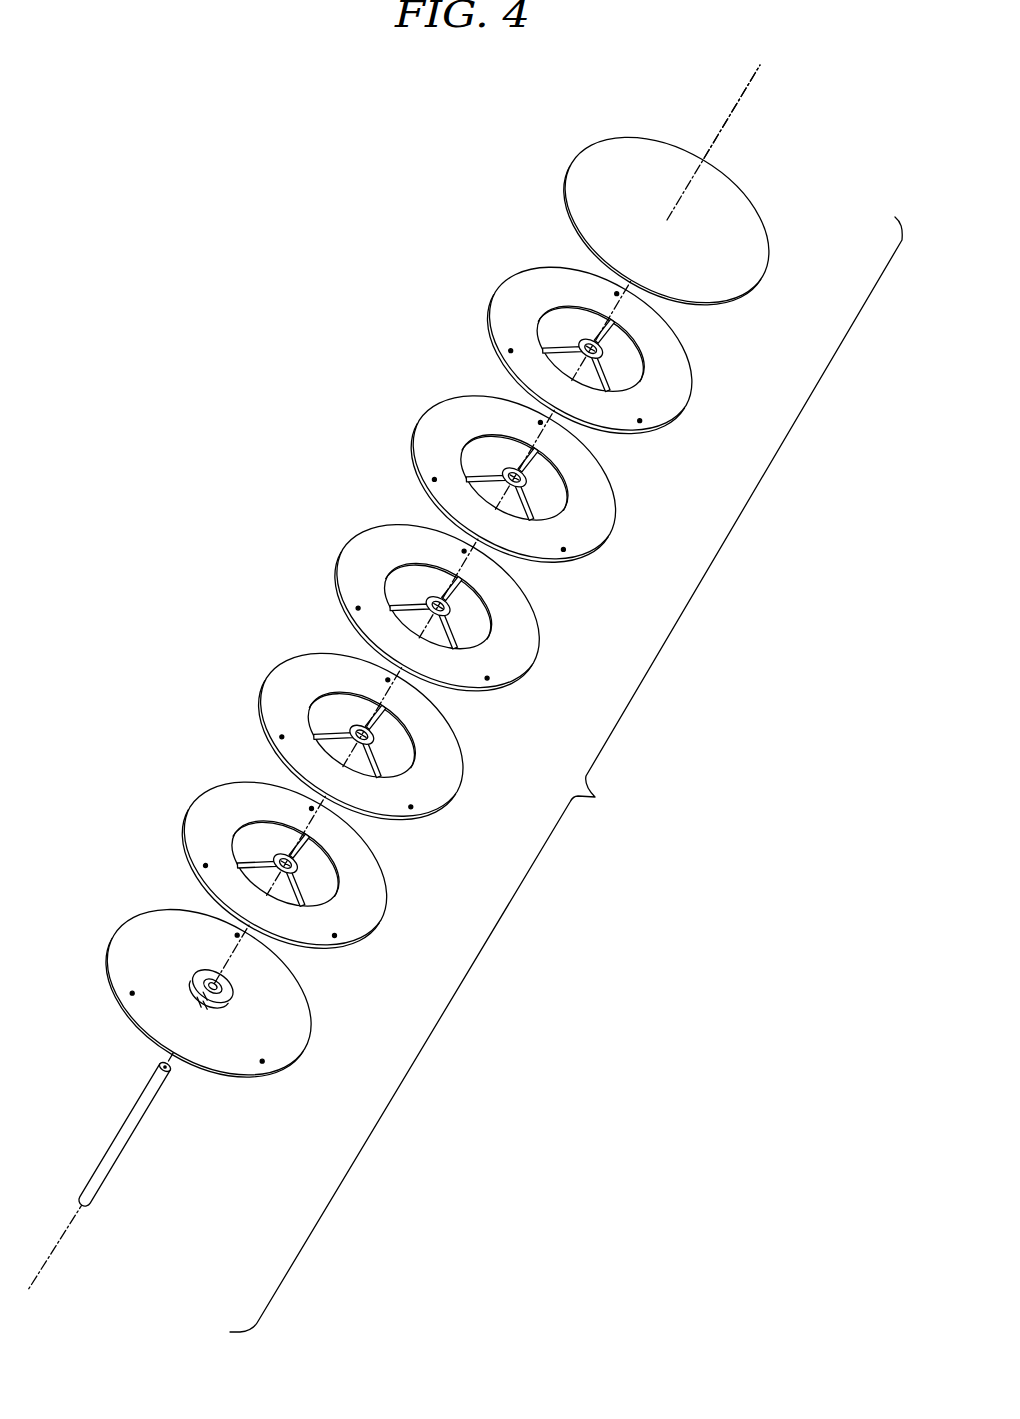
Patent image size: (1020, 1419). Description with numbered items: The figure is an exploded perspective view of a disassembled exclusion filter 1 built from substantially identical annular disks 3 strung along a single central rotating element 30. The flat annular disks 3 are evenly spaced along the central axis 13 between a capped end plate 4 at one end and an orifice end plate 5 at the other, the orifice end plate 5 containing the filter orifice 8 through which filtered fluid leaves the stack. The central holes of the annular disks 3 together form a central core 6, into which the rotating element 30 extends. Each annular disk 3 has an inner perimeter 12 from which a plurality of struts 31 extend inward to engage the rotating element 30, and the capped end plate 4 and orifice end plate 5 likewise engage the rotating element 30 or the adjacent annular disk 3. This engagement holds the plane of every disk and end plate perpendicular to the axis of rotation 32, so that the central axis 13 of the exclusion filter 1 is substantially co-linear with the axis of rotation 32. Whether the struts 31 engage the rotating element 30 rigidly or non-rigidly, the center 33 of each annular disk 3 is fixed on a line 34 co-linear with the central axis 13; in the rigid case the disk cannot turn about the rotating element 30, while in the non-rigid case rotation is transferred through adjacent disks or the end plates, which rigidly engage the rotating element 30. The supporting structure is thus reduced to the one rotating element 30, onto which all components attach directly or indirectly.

The exclusion filter 1 is at (566, 774).
The annular disks 3 is at (407, 643).
The capped end plate 4 is at (768, 270).
The orifice end plate 5 is at (225, 992).
The central core 6 is at (560, 414).
The filter orifice 8 is at (240, 995).
The inner perimeter 12 is at (493, 415).
The central axis 13 is at (449, 677).
The central rotating element 30 is at (132, 1137).
The struts 31 is at (243, 801).
The axis of rotation 32 is at (449, 677).
The center 33 is at (416, 543).
The line 34 is at (750, 92).